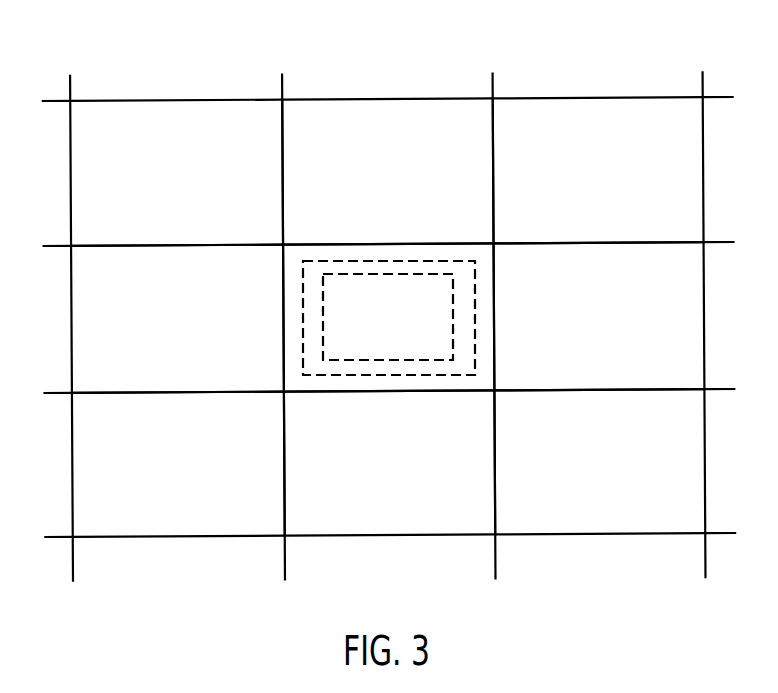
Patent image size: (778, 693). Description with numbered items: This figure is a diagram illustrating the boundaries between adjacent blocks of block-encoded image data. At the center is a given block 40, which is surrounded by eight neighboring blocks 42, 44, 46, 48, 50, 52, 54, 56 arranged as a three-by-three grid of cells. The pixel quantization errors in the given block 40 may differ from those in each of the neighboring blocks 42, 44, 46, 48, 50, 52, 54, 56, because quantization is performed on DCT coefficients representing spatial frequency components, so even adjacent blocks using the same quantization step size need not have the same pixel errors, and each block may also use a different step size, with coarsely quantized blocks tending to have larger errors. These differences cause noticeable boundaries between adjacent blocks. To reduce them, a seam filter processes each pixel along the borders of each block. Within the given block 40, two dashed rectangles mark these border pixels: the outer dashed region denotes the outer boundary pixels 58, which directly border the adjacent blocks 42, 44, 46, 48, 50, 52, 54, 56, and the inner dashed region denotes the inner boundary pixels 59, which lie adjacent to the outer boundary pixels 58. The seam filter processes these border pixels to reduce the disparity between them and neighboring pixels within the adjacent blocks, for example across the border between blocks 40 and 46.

The given block 40 is at (377, 331).
The neighboring block 42 is at (377, 473).
The neighboring block 44 is at (583, 473).
The neighboring block 46 is at (582, 331).
The neighboring block 48 is at (580, 191).
The neighboring block 50 is at (376, 191).
The neighboring block 52 is at (163, 191).
The neighboring block 54 is at (163, 331).
The neighboring block 56 is at (163, 473).
The outer boundary pixels 58 is at (426, 255).
The inner boundary pixels 59 is at (428, 368).